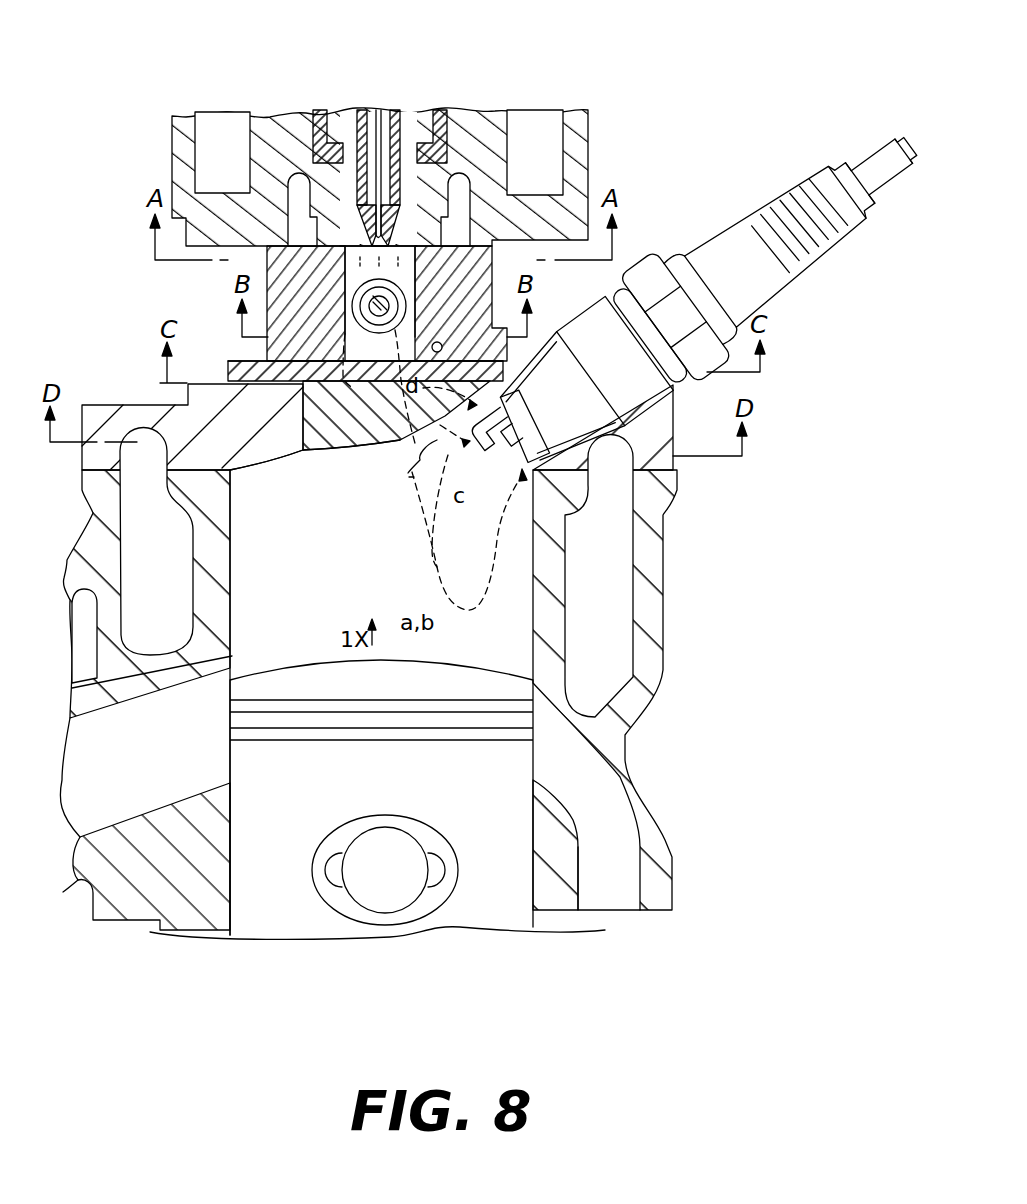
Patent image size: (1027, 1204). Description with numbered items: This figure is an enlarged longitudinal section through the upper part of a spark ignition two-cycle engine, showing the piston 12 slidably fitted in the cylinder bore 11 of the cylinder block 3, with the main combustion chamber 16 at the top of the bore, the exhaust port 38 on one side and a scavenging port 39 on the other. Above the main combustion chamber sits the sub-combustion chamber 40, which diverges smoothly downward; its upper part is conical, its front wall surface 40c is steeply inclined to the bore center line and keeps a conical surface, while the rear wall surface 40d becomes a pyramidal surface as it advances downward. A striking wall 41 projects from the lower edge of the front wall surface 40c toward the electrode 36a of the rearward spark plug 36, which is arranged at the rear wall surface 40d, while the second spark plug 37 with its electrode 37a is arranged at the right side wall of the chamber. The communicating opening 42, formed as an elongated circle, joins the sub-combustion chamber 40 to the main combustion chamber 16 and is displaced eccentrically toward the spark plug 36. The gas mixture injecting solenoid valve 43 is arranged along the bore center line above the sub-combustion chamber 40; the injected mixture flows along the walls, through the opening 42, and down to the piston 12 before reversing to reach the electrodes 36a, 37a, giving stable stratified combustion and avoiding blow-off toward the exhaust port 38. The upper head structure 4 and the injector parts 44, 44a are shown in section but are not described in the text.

The cylinder block 3 is at (652, 677).
The cylinder head lower flange 4 is at (663, 441).
The cylinder bore 11 is at (230, 516).
The piston 12 is at (287, 688).
The main combustion chamber 16 is at (383, 588).
The spark plug 36 is at (738, 232).
The electrode 36a is at (485, 452).
The spark plug 37 is at (352, 304).
The electrode 37a is at (394, 291).
The exhaust port 38 is at (157, 770).
The scavenging port 39 is at (623, 865).
The sub-combustion chamber 40 is at (435, 470).
The front wall surface 40c is at (337, 356).
The rear wall surface 40d is at (420, 336).
The striking wall 41 is at (355, 436).
The communicating opening 42 is at (420, 483).
The gas mixture injecting solenoid valve 43 is at (593, 156).
The fuel injector 44 is at (358, 108).
The injector nozzle 44a is at (383, 108).